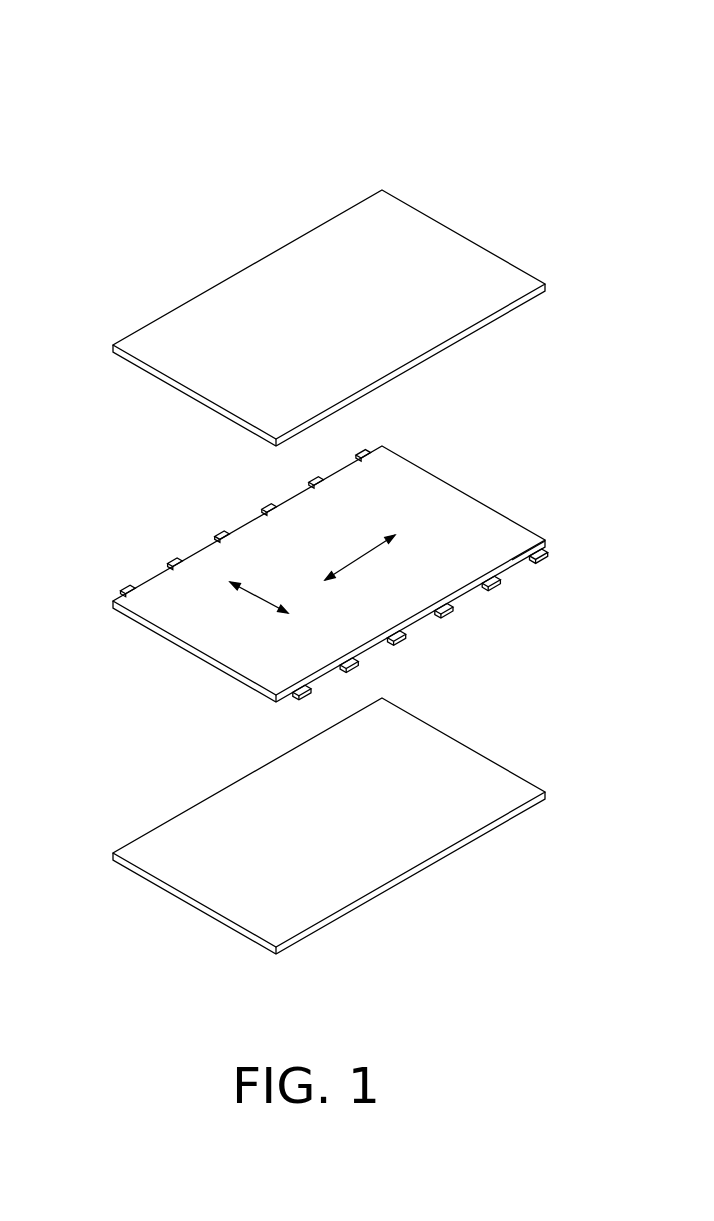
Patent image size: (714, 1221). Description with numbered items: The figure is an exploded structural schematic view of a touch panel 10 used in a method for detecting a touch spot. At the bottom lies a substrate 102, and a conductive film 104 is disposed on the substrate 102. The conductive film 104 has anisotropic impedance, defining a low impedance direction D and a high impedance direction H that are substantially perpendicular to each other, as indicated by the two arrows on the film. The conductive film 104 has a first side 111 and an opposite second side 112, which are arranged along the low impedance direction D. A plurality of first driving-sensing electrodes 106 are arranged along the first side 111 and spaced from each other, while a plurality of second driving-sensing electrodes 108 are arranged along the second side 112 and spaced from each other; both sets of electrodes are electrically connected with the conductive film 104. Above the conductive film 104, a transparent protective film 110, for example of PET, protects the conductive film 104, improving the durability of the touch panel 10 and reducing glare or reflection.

The touch panel 10 is at (234, 46).
The transparent protective film 110 is at (484, 273).
The conductive film 104 is at (450, 527).
The second side 112 is at (193, 553).
The second driving-sensing electrodes 108 is at (120, 590).
The first side 111 is at (512, 567).
The first driving-sensing electrodes 106 is at (495, 588).
The substrate 102 is at (447, 768).